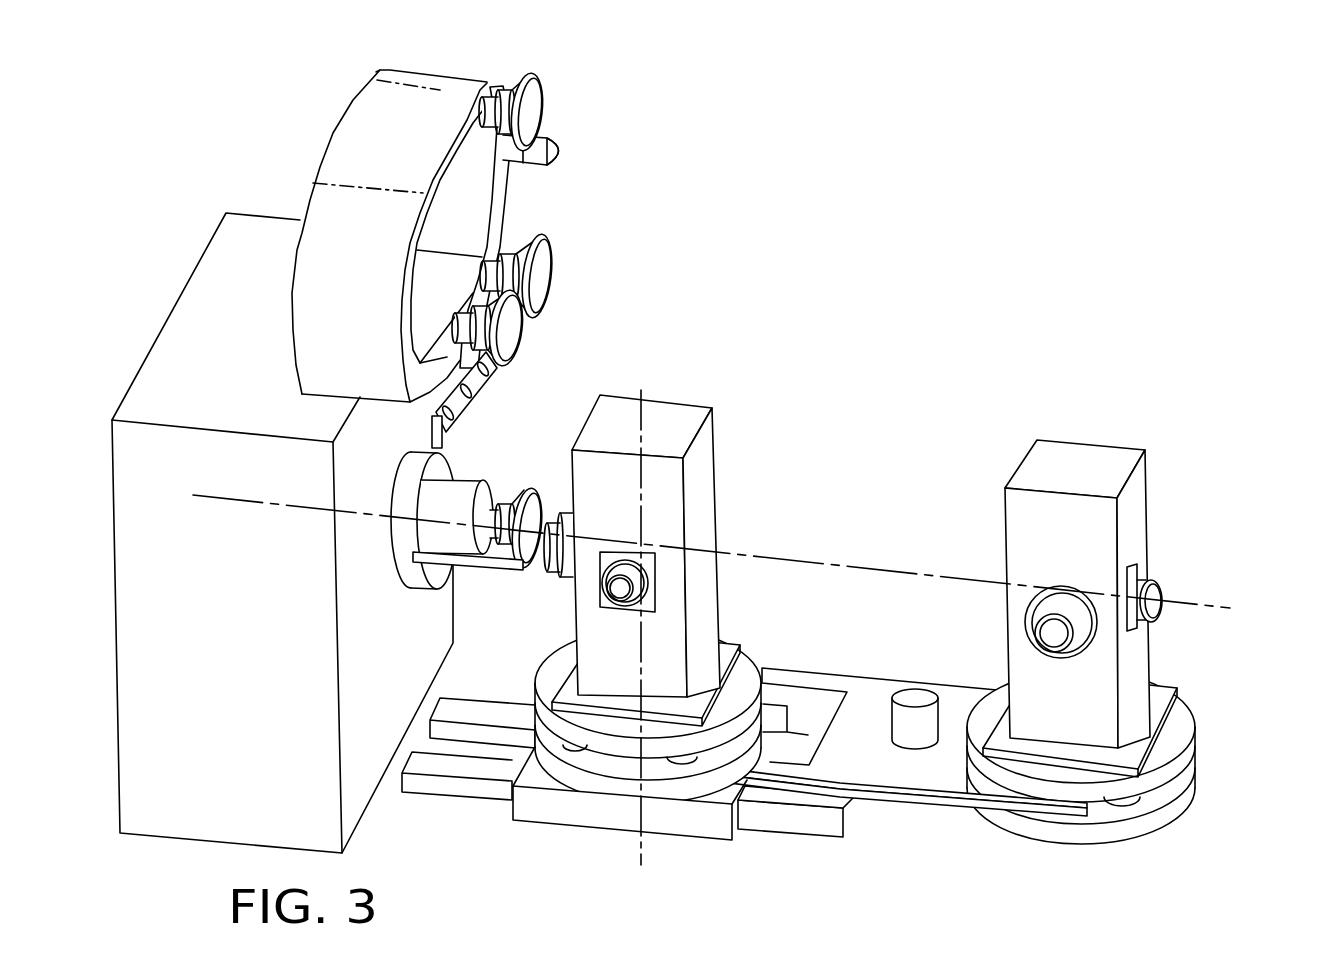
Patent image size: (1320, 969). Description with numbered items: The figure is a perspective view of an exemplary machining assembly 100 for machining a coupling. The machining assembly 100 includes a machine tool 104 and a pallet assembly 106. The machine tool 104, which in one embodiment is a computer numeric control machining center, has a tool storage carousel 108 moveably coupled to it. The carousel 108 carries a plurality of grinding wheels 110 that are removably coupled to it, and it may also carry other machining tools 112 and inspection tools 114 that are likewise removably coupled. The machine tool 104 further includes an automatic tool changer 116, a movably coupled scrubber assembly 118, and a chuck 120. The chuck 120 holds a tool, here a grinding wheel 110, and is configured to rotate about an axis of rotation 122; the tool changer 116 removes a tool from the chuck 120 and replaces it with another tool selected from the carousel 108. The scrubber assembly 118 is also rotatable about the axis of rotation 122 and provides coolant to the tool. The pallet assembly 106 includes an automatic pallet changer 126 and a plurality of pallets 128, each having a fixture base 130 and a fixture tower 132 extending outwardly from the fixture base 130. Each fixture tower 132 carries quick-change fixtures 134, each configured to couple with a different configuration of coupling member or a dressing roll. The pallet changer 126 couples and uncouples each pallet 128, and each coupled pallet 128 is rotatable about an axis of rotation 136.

The machining assembly 100 is at (700, 491).
The machine tool 104 is at (228, 677).
The pallet assembly 106 is at (930, 557).
The tool storage carousel 108 is at (412, 153).
The grinding wheel 110 is at (545, 94).
The machining tool 112 is at (572, 158).
The inspection tool 114 is at (552, 170).
The automatic tool changer 116 is at (433, 432).
The scrubber assembly 118 is at (482, 542).
The chuck 120 is at (453, 492).
The axis of rotation 122 is at (847, 554).
The automatic pallet changer 126 is at (927, 730).
The pallet 128 is at (892, 616).
The fixture base 130 is at (1180, 717).
The fixture tower 132 is at (667, 410).
The quick-change fixture 134 is at (647, 584).
The axis of rotation 136 is at (640, 838).